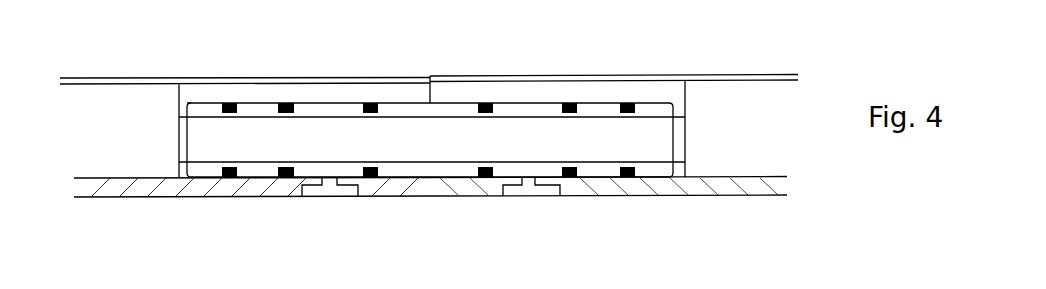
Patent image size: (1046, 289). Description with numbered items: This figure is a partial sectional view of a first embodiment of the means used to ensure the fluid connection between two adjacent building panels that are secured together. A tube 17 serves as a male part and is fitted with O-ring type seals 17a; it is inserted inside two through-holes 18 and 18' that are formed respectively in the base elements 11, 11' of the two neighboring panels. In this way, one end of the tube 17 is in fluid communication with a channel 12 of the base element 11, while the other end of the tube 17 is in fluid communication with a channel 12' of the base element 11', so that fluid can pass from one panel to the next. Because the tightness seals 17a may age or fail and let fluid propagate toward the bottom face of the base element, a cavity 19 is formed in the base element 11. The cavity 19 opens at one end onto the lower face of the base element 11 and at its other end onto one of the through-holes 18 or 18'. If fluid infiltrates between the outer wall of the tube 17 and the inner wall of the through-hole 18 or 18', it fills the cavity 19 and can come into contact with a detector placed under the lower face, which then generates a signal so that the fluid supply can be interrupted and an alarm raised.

The base element 11 is at (608, 222).
The base element 11' is at (252, 222).
The channel 12 is at (614, 126).
The channel 12' is at (245, 128).
The tube 17 is at (453, 110).
The O-ring type seals 17a is at (575, 103).
The through-hole 18 is at (637, 95).
The through-hole 18' is at (308, 58).
The cavity 19 is at (327, 197).